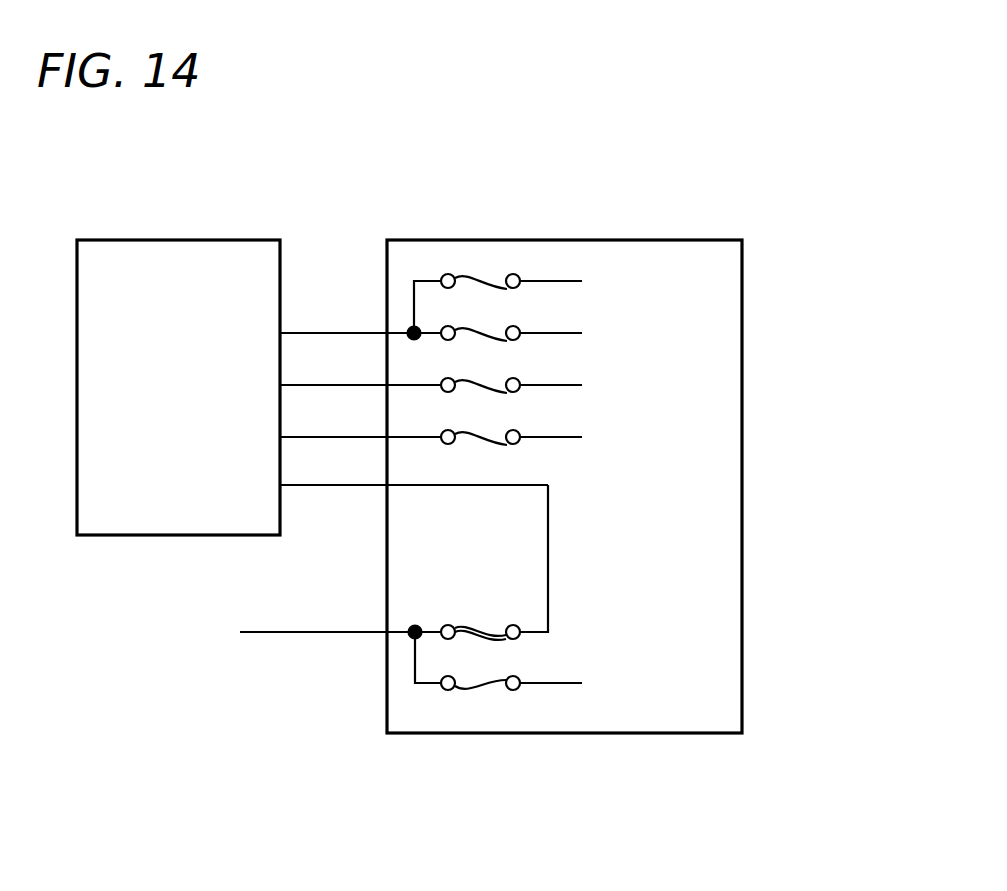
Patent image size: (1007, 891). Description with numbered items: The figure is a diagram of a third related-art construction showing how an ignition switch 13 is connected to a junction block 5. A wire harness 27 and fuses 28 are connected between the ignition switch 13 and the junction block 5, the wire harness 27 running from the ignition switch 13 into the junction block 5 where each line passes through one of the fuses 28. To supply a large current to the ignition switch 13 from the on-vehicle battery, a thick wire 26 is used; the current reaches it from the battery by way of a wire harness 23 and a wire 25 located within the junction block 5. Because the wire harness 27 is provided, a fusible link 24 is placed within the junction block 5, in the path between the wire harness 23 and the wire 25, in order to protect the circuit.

The ignition switch 13 is at (183, 240).
The junction block 5 is at (627, 239).
The wire harness 27 is at (332, 437).
The fuses 28 is at (478, 430).
The thick wire 26 is at (323, 486).
The wire 25 is at (548, 553).
The fusible link 24 is at (467, 626).
The wire harness 23 is at (323, 633).